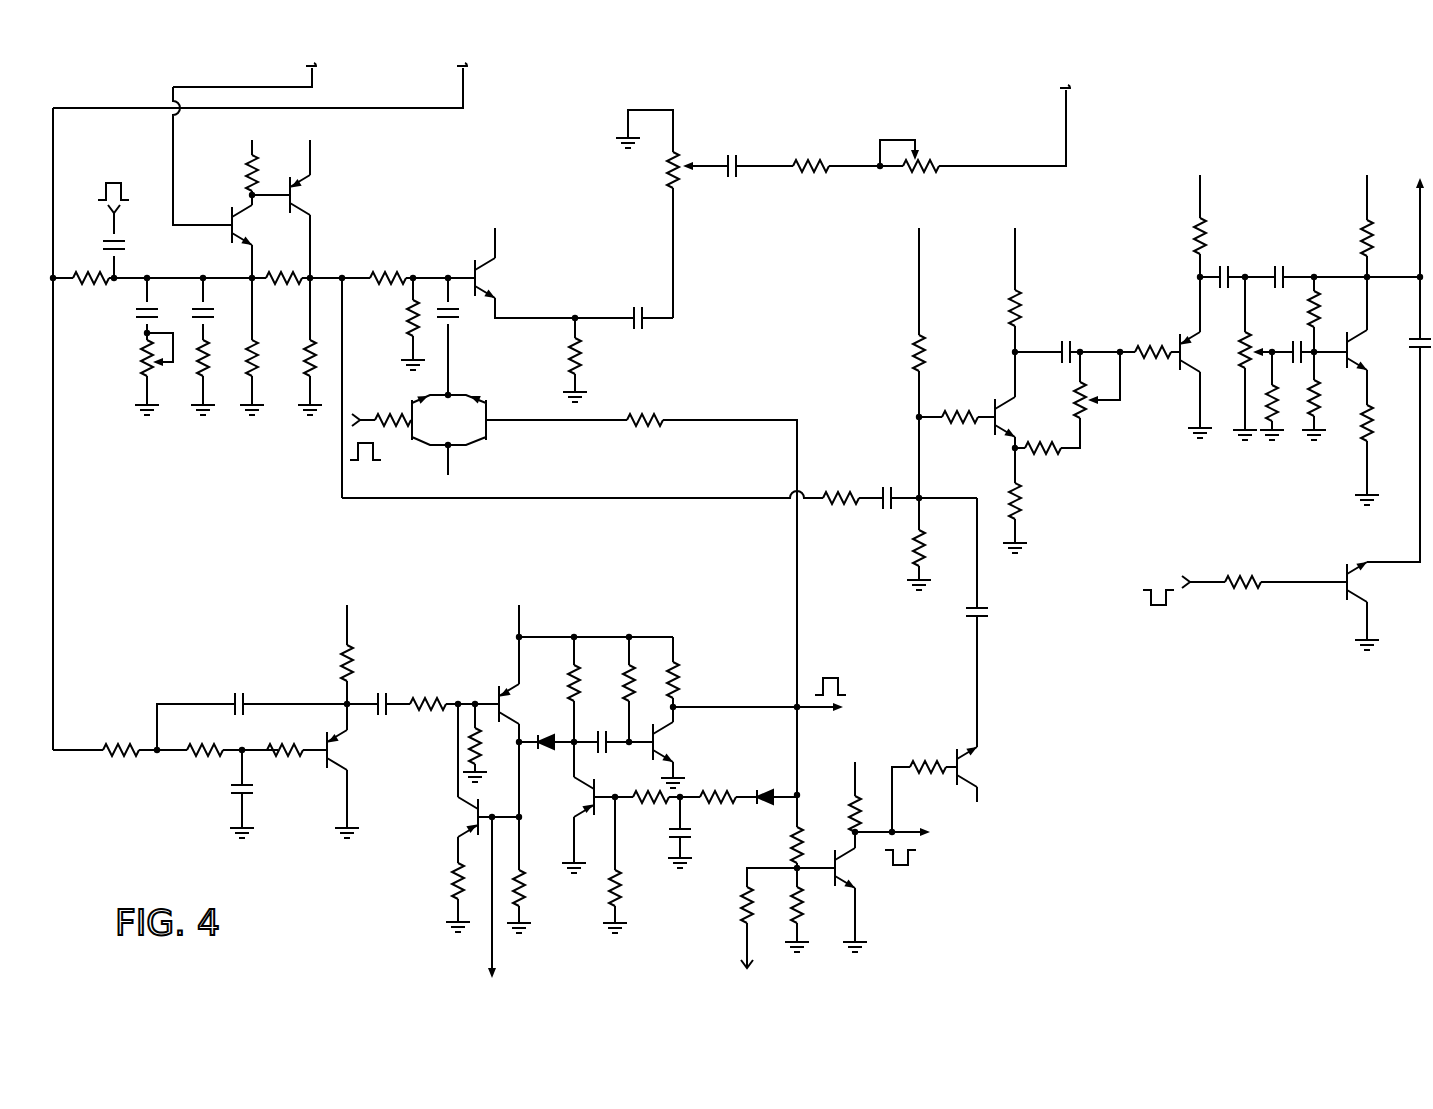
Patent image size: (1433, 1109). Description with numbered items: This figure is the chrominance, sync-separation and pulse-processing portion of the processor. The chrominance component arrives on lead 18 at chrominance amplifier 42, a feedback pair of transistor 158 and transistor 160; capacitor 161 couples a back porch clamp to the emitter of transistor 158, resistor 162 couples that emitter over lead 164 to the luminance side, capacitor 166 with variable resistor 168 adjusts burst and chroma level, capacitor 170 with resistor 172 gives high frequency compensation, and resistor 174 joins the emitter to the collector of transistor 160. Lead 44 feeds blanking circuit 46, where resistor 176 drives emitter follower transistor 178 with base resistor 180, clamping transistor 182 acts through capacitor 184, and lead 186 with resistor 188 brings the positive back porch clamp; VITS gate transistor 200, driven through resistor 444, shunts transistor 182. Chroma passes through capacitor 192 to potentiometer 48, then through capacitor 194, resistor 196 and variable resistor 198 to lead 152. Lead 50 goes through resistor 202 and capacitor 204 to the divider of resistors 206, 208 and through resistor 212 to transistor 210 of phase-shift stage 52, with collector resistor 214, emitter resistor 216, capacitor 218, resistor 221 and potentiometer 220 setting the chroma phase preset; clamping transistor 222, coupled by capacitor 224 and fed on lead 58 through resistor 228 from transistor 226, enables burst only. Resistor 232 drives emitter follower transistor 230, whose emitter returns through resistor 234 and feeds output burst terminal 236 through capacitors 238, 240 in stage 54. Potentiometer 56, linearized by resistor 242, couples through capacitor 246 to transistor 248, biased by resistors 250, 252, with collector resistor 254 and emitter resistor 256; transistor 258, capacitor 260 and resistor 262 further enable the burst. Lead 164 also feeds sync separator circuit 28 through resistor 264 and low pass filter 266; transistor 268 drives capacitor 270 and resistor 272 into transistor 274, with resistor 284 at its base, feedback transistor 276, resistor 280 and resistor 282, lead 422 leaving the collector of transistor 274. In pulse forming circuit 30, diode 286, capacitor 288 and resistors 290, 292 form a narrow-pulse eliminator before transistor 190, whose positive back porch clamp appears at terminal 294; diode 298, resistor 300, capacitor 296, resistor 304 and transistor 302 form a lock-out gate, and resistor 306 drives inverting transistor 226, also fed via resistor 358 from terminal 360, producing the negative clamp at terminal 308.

The lead 164 is at (96, 108).
The lead 18 is at (173, 145).
The chrominance amplifier 42 is at (291, 169).
The transistor 160 is at (297, 198).
The transistor 158 is at (237, 233).
The resistor 162 is at (88, 272).
The capacitor 161 is at (122, 248).
The lead 44 is at (342, 274).
The resistor 176 is at (388, 272).
The emitter follower transistor 178 is at (492, 280).
The capacitor 166 is at (135, 313).
The variable resistor 168 is at (140, 360).
The capacitor 170 is at (212, 318).
The resistor 172 is at (210, 373).
The resistor 174 is at (285, 290).
The base resistor 180 is at (408, 314).
The capacitor 184 is at (455, 318).
The blanking circuit 46 is at (504, 472).
The VITS gate transistor 200 is at (400, 406).
The resistor 444 is at (380, 426).
The clamping transistor 182 is at (486, 405).
The resistor 188 is at (648, 418).
The lead 186 is at (745, 419).
The lead 50 is at (342, 484).
The capacitor 192 is at (640, 305).
The adjustment potentiometer 48 is at (660, 168).
The capacitor 194 is at (732, 158).
The resistor 196 is at (812, 163).
The variable resistor 198 is at (915, 158).
The lead 152 is at (1020, 166).
The voltage divider resistor 206 is at (917, 353).
The resistor 212 is at (957, 412).
The transistor 210 is at (992, 427).
The phase-shift stage 52 is at (1057, 406).
The resistor 214 is at (1012, 298).
The resistor 221 is at (1042, 455).
The resistor 216 is at (1022, 503).
The capacitor 218 is at (1068, 340).
The potentiometer 220 is at (1092, 410).
The coupling resistor 232 is at (1152, 358).
The transistor 230 is at (1182, 345).
The resistor 234 is at (1195, 235).
The capacitor 238 is at (1223, 270).
The capacitor 240 is at (1280, 270).
The phase-shift circuit 54 is at (1349, 264).
The output burst terminal 236 is at (1415, 275).
The resistor 254 is at (1360, 230).
The potentiometer 56 is at (1250, 354).
The linearizing resistor 242 is at (1290, 397).
The capacitor 246 is at (1297, 340).
The resistor 250 is at (1310, 310).
The resistor 252 is at (1320, 392).
The transistor 248 is at (1358, 327).
The resistor 256 is at (1372, 432).
The capacitor 260 is at (1410, 345).
The transistor 258 is at (1370, 590).
The resistor 262 is at (1243, 580).
The resistor 202 is at (838, 492).
The capacitor 204 is at (887, 485).
The voltage divider resistor 208 is at (915, 540).
The capacitor 224 is at (993, 612).
The resistor 264 is at (113, 763).
The low pass filter 266 is at (150, 727).
The transistor 268 is at (345, 756).
The capacitor 270 is at (382, 692).
The resistor 272 is at (430, 693).
The resistor 284 is at (468, 740).
The transistor 274 is at (497, 690).
The transistor 276 is at (470, 826).
The resistor 280 is at (455, 882).
The resistor 282 is at (530, 892).
The lead 422 is at (490, 950).
The sync separator circuit 28 is at (511, 791).
The resistor 290 is at (563, 680).
The resistor 292 is at (618, 680).
The diode 286 is at (541, 730).
The capacitor 288 is at (600, 730).
The transistor 190 is at (667, 742).
The terminal 294 is at (838, 712).
The pulse forming circuit 30 is at (749, 756).
The transistor 302 is at (588, 795).
The resistor 304 is at (648, 790).
The capacitor 296 is at (672, 830).
The resistor 300 is at (716, 800).
The diode 298 is at (762, 802).
The resistor 306 is at (800, 845).
The resistor 358 is at (735, 908).
The terminal 360 is at (740, 950).
The inverting transistor 226 is at (850, 880).
The terminal 308 is at (895, 832).
The line 58 is at (893, 803).
The coupling resistor 228 is at (925, 760).
The clamping transistor 222 is at (978, 768).